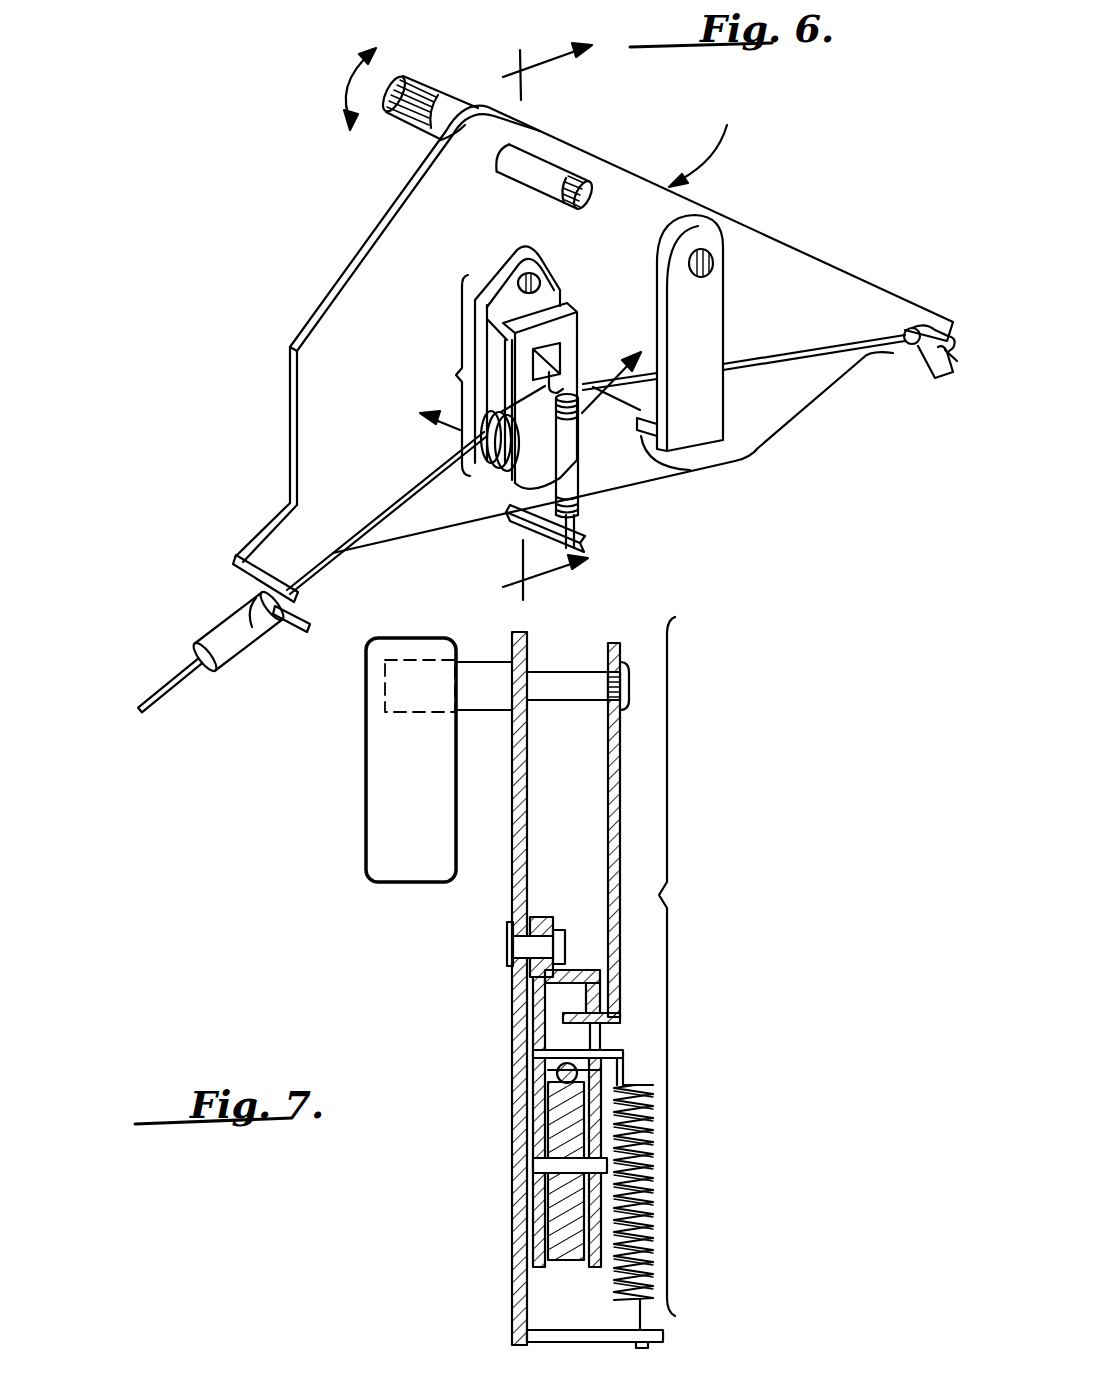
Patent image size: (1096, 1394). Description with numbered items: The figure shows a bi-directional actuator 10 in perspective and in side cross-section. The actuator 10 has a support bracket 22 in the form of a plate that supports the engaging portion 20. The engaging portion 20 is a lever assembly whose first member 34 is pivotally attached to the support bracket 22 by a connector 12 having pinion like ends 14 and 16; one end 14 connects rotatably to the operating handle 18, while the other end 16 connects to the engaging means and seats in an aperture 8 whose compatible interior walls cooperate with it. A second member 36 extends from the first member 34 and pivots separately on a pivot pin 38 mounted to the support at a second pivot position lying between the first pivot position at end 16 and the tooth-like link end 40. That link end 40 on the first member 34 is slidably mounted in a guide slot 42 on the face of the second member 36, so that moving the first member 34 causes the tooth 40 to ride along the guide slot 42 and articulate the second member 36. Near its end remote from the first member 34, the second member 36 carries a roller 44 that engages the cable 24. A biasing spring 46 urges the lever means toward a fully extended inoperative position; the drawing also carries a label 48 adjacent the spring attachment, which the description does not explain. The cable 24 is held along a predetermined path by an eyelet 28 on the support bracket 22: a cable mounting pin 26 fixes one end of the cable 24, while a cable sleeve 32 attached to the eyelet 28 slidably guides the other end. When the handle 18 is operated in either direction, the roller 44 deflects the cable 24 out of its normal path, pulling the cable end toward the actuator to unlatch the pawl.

In FIG. 6, the aperture 8 is at (703, 252).
In FIG. 6, the actuator 10 is at (706, 138).
In FIG. 6, the connector 12 is at (463, 110).
In FIG. 7, the connector 12 is at (477, 668).
In FIG. 6, the pinion like end 14 is at (423, 87).
In FIG. 6, the pinion like end 16 is at (585, 183).
In FIG. 7, the pinion like end 16 is at (623, 667).
In FIG. 7, the handle 18 is at (377, 770).
In FIG. 7, the engaging portion 20 is at (699, 966).
In FIG. 6, the support bracket 22 is at (818, 260).
In FIG. 7, the support bracket 22 is at (520, 857).
In FIG. 6, the cable 24 is at (862, 358).
In FIG. 7, the cable 24 is at (580, 1062).
In FIG. 6, the cable mounting pin 26 is at (957, 381).
In FIG. 6, the eyelet 28 is at (247, 578).
In FIG. 6, the cable sleeve 32 is at (265, 613).
In FIG. 7, the cable sleeve 32 is at (513, 983).
In FIG. 6, the first member 34 is at (712, 322).
In FIG. 7, the first member 34 is at (613, 767).
In FIG. 6, the second member 36 is at (495, 367).
In FIG. 6, the pivot pin 38 is at (533, 280).
In FIG. 7, the pivot pin 38 is at (518, 946).
In FIG. 6, the link end 40 is at (645, 440).
In FIG. 6, the guide slot 42 is at (548, 338).
In FIG. 6, the roller 44 is at (489, 470).
In FIG. 7, the roller 44 is at (570, 1253).
In FIG. 6, the biasing spring 46 is at (572, 481).
In FIG. 7, the biasing spring 46 is at (652, 1280).
In FIG. 6, the hook 48 is at (562, 378).